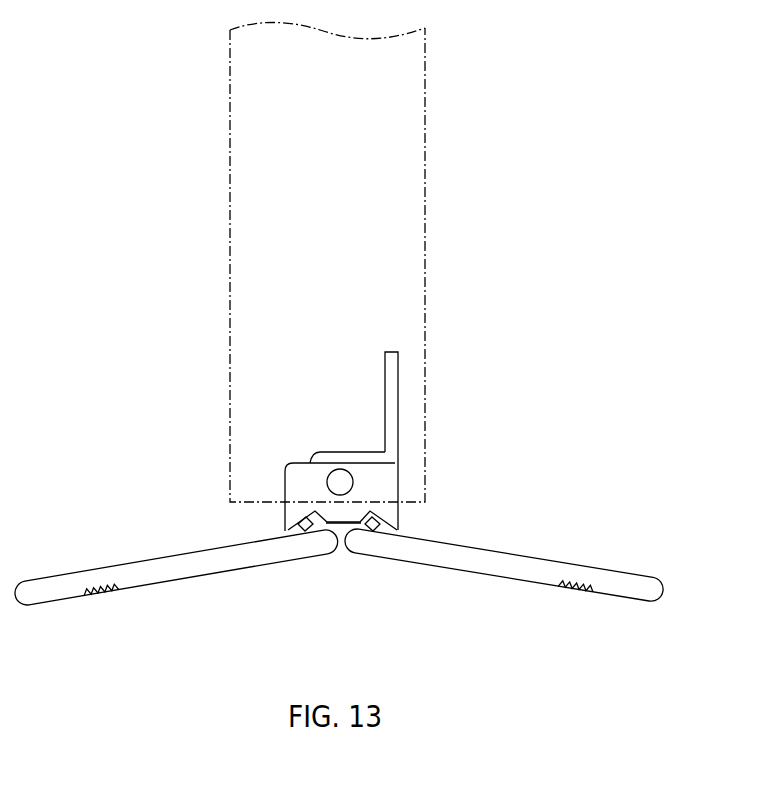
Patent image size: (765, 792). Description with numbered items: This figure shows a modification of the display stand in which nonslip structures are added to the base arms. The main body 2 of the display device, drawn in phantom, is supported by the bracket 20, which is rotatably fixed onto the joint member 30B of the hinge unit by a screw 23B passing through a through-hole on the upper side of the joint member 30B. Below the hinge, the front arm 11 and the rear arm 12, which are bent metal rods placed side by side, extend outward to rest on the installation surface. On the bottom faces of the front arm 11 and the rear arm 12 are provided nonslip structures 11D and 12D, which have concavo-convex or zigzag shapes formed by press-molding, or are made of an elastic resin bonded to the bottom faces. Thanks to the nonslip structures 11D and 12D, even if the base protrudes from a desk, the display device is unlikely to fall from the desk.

The main body 2 is at (425, 85).
The bracket 20 is at (392, 407).
The joint member 30B is at (300, 481).
The screw 23B is at (348, 481).
The front arm 11 is at (78, 578).
The nonslip structure 11D is at (100, 600).
The rear arm 12 is at (605, 578).
The nonslip structure 12D is at (582, 598).